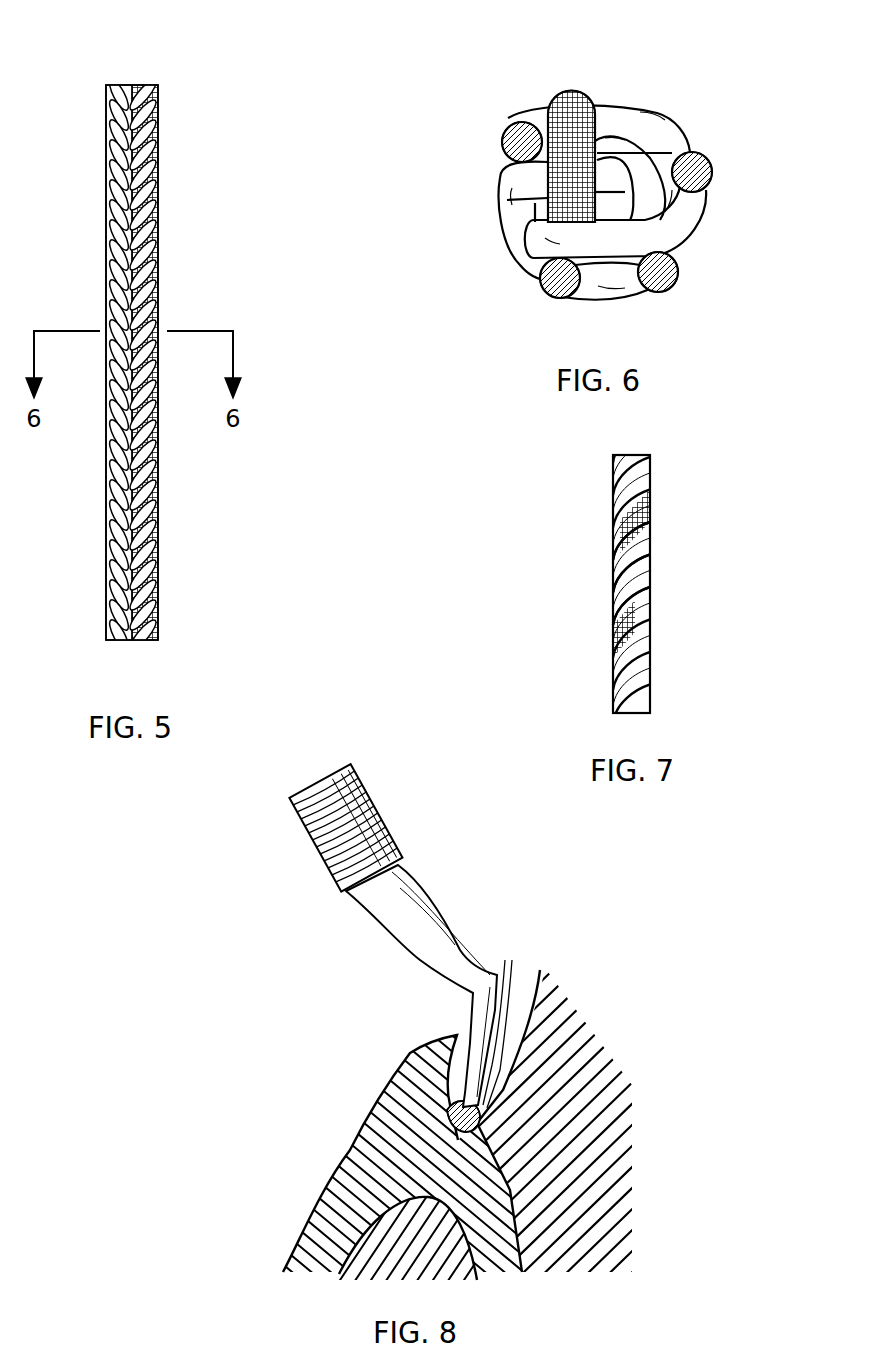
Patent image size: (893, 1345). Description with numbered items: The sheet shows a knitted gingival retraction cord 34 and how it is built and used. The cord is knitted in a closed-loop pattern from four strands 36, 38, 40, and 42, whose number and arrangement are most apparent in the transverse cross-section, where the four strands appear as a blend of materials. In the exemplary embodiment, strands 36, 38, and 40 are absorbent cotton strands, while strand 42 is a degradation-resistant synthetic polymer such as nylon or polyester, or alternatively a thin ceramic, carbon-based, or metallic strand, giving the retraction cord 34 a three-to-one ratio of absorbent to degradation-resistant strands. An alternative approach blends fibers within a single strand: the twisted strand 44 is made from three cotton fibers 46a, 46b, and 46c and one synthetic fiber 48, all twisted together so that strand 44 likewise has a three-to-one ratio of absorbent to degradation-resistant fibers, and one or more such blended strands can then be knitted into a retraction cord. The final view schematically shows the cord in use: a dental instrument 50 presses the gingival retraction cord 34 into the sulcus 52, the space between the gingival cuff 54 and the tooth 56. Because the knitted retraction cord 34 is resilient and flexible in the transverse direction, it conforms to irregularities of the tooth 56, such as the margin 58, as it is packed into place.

In FIG. 5, the gingival retraction cord 34 is at (162, 334).
In FIG. 6, the gingival retraction cord 34 is at (603, 178).
In FIG. 8, the gingival retraction cord 34 is at (506, 962).
In FIG. 5, the strand 36 is at (110, 92).
In FIG. 6, the strand 36 is at (503, 140).
In FIG. 5, the strand 38 is at (117, 126).
In FIG. 6, the strand 38 is at (713, 171).
In FIG. 5, the strand 40 is at (151, 91).
In FIG. 6, the strand 40 is at (666, 291).
In FIG. 5, the strand 42 is at (162, 119).
In FIG. 6, the strand 42 is at (557, 298).
In FIG. 7, the strand 44 is at (615, 574).
In FIG. 7, the cotton fiber 46a is at (613, 577).
In FIG. 7, the cotton fiber 46b is at (613, 607).
In FIG. 7, the cotton fiber 46c is at (613, 635).
In FIG. 7, the synthetic fiber 48 is at (651, 500).
In FIG. 8, the dental instrument 50 is at (432, 928).
In FIG. 8, the sulcus 52 is at (470, 1150).
In FIG. 8, the gingival cuff 54 is at (377, 1117).
In FIG. 8, the tooth 56 is at (613, 1073).
In FIG. 8, the margin 58 is at (490, 1123).